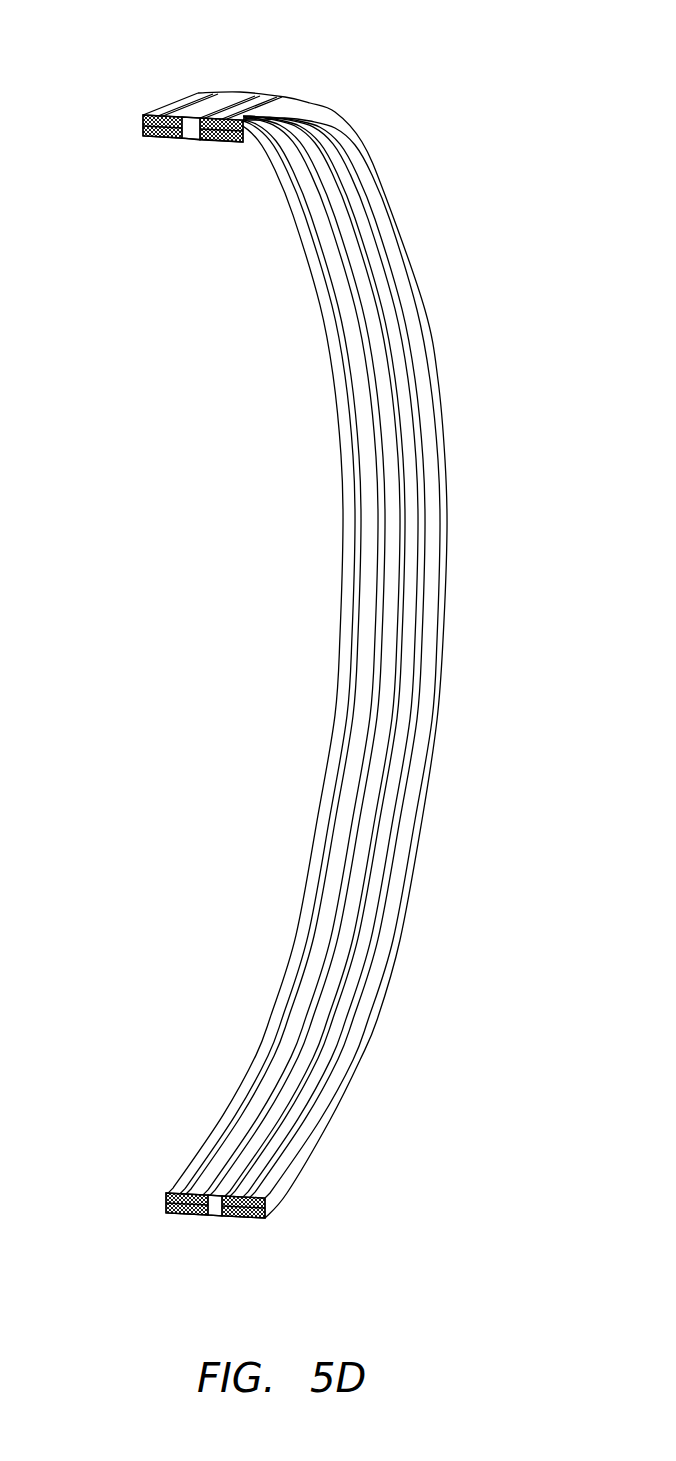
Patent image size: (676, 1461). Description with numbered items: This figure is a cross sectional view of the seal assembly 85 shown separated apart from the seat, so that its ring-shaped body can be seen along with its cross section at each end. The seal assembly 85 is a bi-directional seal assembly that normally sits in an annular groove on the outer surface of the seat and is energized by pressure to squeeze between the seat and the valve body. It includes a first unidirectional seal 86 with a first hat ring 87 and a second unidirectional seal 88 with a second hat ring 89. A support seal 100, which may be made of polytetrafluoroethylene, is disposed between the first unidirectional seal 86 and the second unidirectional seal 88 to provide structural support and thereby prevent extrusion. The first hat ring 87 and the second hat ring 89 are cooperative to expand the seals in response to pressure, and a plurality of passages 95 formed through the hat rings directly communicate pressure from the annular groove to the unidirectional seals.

The seal assembly 85 is at (308, 673).
The first unidirectional seal 86 is at (233, 107).
The first hat ring 87 is at (273, 103).
The second unidirectional seal 88 is at (193, 100).
The second hat ring 89 is at (142, 127).
The passages 95 is at (148, 133).
The support seal 100 is at (192, 132).